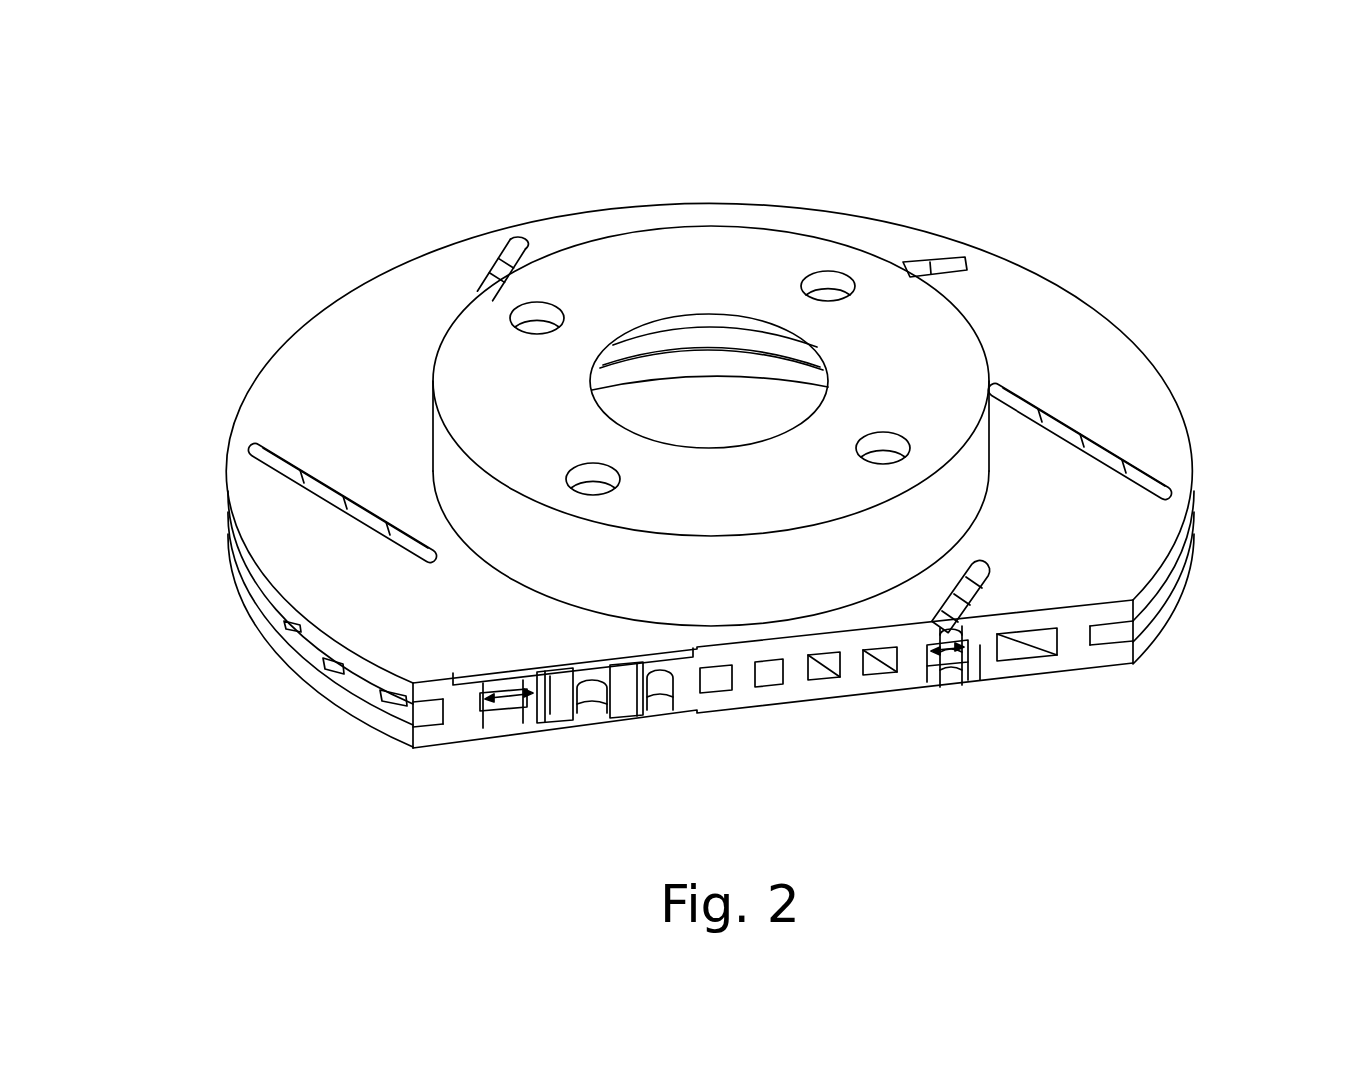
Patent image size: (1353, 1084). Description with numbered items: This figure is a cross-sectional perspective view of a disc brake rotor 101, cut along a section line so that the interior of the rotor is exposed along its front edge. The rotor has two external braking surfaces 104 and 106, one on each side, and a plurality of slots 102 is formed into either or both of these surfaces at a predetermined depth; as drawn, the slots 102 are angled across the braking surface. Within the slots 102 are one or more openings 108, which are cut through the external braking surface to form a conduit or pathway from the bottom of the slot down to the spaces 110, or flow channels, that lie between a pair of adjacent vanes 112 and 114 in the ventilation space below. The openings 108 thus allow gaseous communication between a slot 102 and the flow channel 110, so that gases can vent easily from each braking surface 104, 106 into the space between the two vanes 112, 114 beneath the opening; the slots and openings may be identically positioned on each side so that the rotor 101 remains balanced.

The disc brake rotor 101 is at (270, 218).
The slots 102 is at (518, 240).
The external braking surface 104 is at (293, 563).
The external braking surface 106 is at (365, 722).
The openings 108 is at (528, 710).
The spaces (flow channels) 110 is at (517, 695).
The vane 112 is at (462, 707).
The vane 114 is at (550, 700).